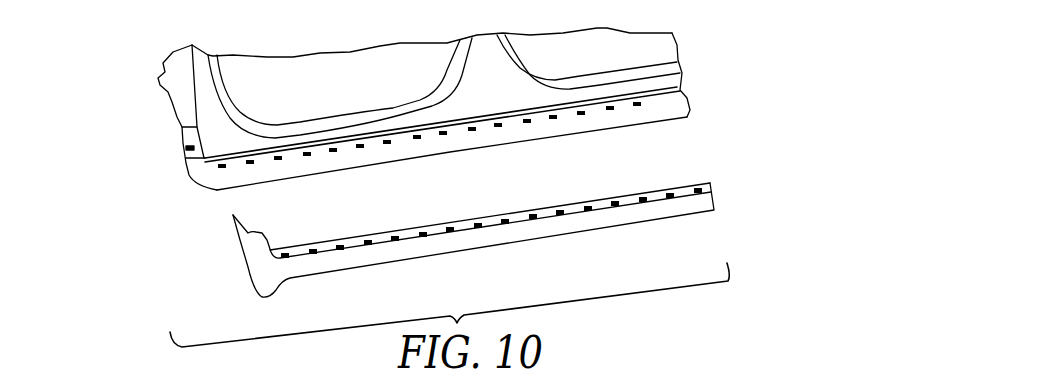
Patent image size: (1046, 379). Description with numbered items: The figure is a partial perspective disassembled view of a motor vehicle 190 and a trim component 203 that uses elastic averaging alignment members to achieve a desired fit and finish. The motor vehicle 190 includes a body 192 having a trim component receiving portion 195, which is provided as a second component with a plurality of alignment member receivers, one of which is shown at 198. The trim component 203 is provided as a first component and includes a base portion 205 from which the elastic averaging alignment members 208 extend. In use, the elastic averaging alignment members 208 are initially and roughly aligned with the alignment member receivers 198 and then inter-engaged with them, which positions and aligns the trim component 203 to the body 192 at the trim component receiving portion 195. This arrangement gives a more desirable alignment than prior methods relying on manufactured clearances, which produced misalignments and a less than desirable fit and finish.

The motor vehicle 190 is at (183, 222).
The body 192 is at (167, 115).
The trim component receiving portion 195 is at (661, 106).
The alignment member receiver 198 is at (528, 123).
The trim component 203 is at (518, 218).
The base portion 205 is at (689, 186).
The elastic averaging alignment members 208 is at (559, 205).